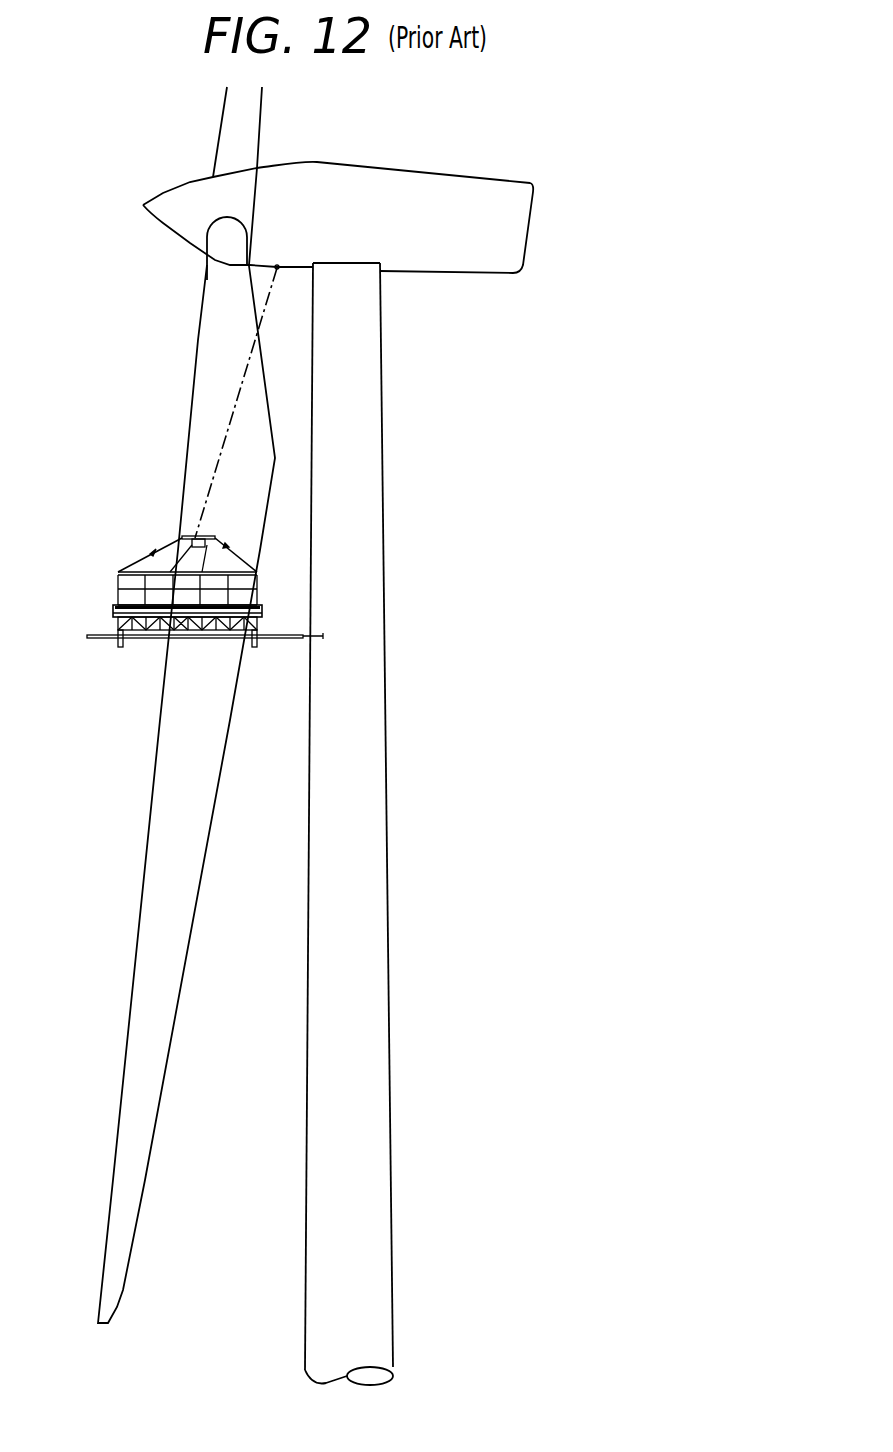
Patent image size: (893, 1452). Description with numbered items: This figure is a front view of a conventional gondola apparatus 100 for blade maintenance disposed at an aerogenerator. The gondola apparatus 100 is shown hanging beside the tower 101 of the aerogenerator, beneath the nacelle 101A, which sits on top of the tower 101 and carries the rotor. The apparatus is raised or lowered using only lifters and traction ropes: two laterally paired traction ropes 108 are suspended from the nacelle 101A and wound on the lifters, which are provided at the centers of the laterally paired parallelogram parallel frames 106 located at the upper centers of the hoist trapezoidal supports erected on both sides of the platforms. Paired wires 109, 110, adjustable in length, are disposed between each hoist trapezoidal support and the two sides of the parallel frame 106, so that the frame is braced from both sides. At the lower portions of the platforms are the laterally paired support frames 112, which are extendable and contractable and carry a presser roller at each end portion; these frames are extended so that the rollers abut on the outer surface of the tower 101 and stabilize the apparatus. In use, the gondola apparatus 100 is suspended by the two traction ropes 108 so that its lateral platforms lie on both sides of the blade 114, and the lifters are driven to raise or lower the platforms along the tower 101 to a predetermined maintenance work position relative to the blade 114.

The gondola apparatus 100 is at (193, 590).
The tower 101 is at (382, 673).
The nacelle 101A is at (475, 272).
The parallelogram parallel frame 106 is at (193, 535).
The traction rope 108 is at (238, 402).
The wire 109 is at (142, 558).
The wire 110 is at (243, 553).
The support frame 112 is at (262, 637).
The blade 114 is at (193, 390).